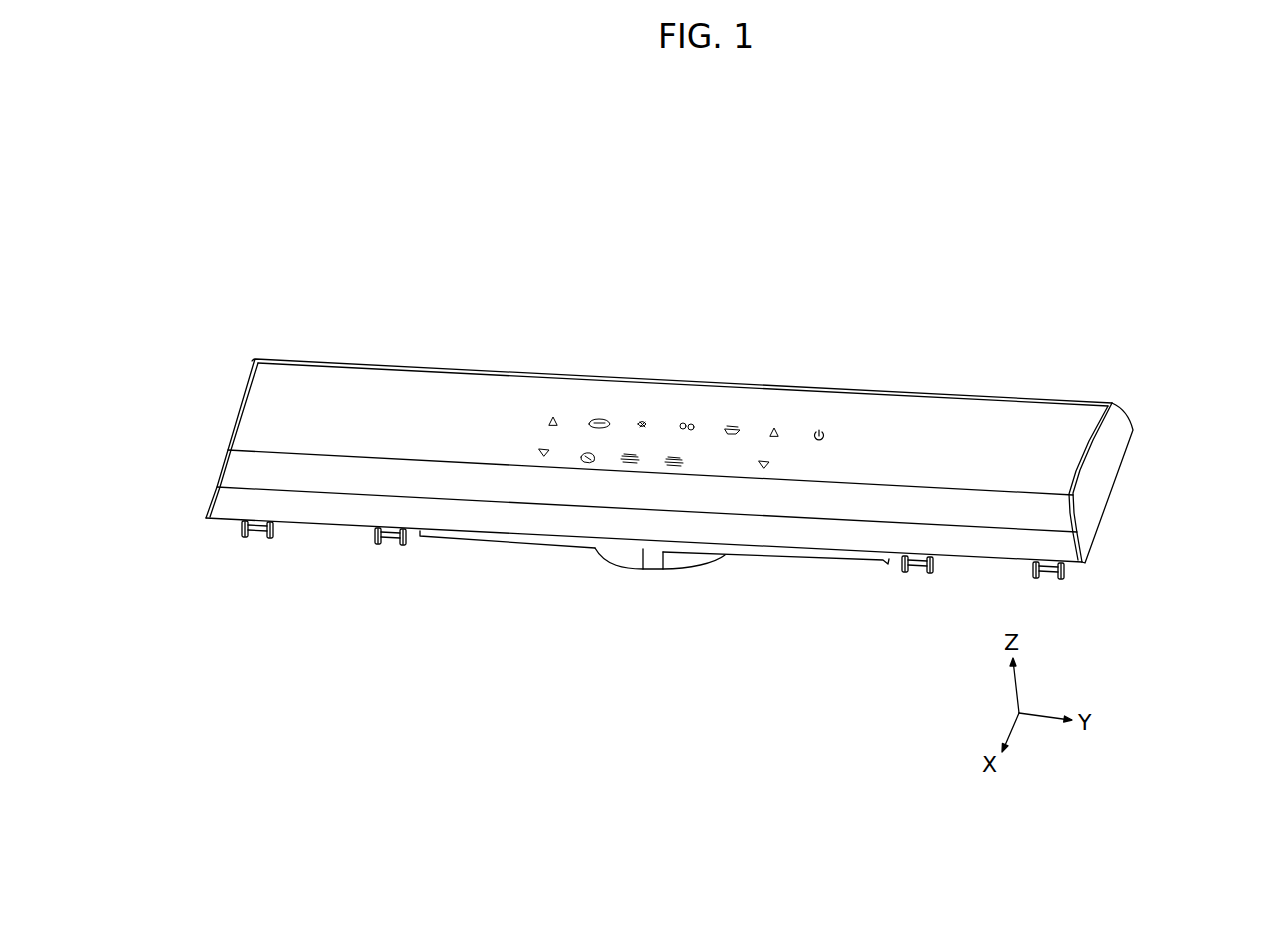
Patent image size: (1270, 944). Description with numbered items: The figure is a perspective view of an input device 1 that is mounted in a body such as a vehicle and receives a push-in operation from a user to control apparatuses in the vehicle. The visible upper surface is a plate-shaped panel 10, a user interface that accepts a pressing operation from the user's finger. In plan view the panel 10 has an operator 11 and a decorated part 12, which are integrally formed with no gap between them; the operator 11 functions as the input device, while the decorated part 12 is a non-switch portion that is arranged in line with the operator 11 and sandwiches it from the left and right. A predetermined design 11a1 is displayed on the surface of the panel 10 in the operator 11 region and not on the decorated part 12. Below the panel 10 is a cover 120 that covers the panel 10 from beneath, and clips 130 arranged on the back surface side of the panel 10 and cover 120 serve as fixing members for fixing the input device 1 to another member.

The input device 1 is at (1147, 336).
The panel 10 is at (1127, 411).
The operator 11 is at (693, 370).
The design 11a1 is at (804, 460).
The decorated part 12 is at (345, 352).
The cover 120 is at (652, 571).
The clip 130 is at (387, 546).